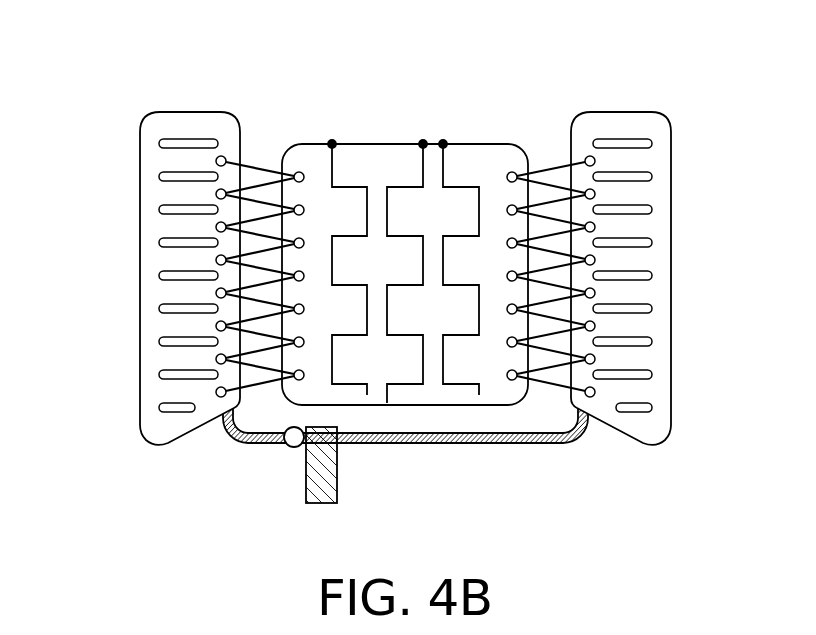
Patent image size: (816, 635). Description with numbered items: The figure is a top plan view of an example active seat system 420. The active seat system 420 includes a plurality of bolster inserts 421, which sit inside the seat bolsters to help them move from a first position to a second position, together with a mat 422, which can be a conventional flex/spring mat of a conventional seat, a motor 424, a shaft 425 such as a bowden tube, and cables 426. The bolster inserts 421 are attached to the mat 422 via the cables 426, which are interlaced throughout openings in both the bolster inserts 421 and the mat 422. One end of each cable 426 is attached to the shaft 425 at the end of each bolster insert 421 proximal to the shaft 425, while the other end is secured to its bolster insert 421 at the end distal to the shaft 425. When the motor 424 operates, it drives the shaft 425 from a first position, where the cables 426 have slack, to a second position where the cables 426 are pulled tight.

The active seat system 420 is at (95, 62).
The bolster inserts 421 is at (140, 198).
The mat 422 is at (449, 136).
The motor 424 is at (310, 503).
The shaft 425 is at (229, 441).
The cables 426 is at (261, 157).